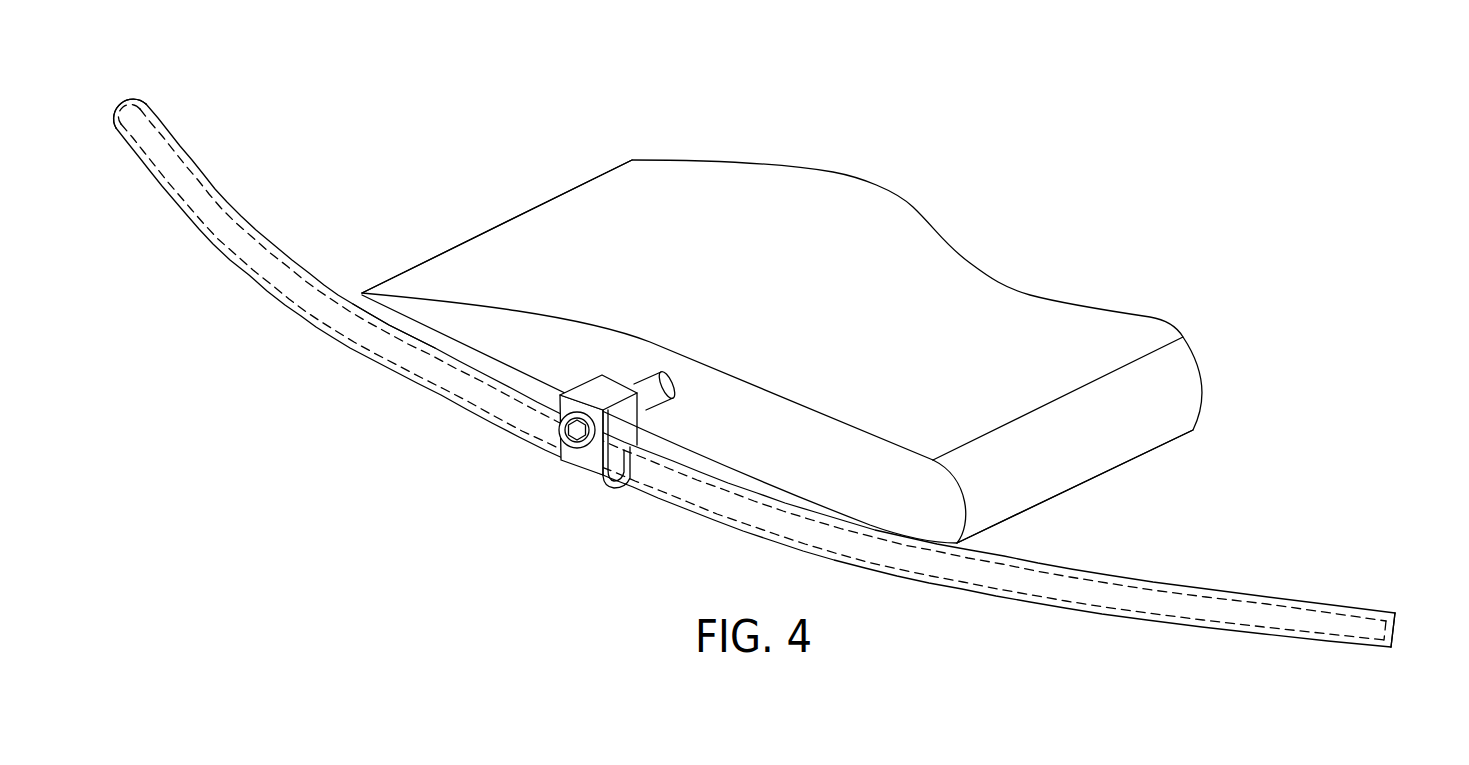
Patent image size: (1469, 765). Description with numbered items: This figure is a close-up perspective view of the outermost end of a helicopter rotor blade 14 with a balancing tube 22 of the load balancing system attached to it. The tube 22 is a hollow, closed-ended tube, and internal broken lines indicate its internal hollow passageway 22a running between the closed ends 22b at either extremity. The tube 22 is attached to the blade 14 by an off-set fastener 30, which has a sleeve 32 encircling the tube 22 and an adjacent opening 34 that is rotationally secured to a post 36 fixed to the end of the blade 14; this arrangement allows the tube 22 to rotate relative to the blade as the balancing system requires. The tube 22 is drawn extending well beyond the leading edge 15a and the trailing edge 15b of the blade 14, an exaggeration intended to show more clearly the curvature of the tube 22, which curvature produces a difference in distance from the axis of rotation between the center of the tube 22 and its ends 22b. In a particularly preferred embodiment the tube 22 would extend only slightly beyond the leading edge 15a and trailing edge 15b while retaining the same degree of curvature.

The blade 14 is at (852, 172).
The leading edge 15a is at (1093, 447).
The trailing edge 15b is at (478, 235).
The tube 22 is at (288, 298).
The internal hollow passageway 22a is at (378, 340).
The closed ends 22b is at (125, 98).
The off-set fastener 30 is at (641, 419).
The sleeve 32 is at (580, 467).
The opening 34 is at (617, 396).
The post 36 is at (655, 391).